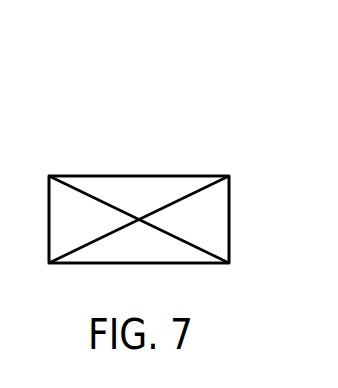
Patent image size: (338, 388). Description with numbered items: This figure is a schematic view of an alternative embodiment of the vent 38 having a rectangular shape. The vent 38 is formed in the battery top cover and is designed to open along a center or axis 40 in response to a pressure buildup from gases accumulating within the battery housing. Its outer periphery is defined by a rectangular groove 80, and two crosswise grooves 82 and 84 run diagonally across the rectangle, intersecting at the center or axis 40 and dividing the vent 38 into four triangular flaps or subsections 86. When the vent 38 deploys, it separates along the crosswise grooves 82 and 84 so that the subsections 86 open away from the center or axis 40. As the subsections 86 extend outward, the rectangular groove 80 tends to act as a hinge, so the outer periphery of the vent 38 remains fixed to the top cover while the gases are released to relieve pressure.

The vent 38 is at (205, 80).
The center or axis 40 is at (138, 220).
The rectangular groove 80 is at (140, 176).
The crosswise groove 82 is at (98, 193).
The crosswise groove 84 is at (184, 193).
The flaps or subsections 86 is at (83, 182).